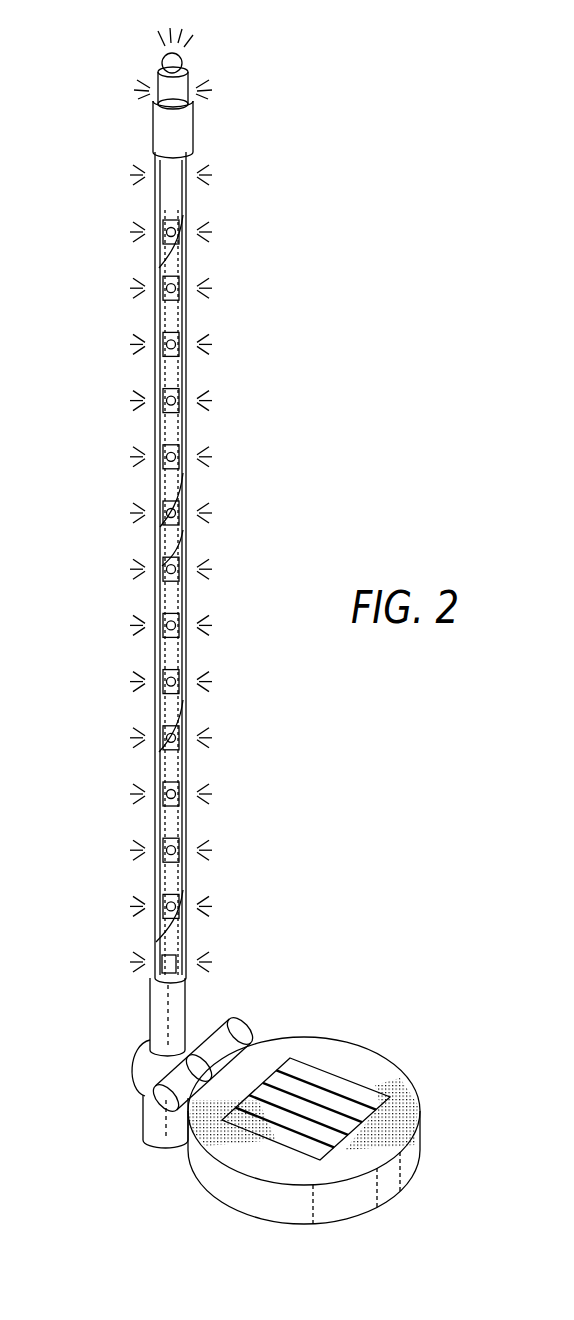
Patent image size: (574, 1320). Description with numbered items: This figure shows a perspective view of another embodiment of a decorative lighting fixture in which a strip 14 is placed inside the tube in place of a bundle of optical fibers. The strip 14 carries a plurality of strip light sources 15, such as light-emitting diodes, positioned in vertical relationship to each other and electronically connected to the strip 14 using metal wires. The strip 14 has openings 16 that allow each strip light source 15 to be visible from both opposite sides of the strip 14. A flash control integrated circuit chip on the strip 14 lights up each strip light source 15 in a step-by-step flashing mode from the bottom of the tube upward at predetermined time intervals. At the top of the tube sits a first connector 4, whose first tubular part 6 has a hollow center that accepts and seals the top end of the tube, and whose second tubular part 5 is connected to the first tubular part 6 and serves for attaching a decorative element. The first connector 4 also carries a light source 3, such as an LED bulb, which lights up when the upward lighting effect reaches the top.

The light source 3 is at (184, 63).
The first connector 4 is at (200, 91).
The second tubular part 5 is at (166, 82).
The first tubular part 6 is at (162, 128).
The strip 14 is at (168, 598).
The strip light source 15 is at (172, 567).
The opening 16 is at (168, 578).